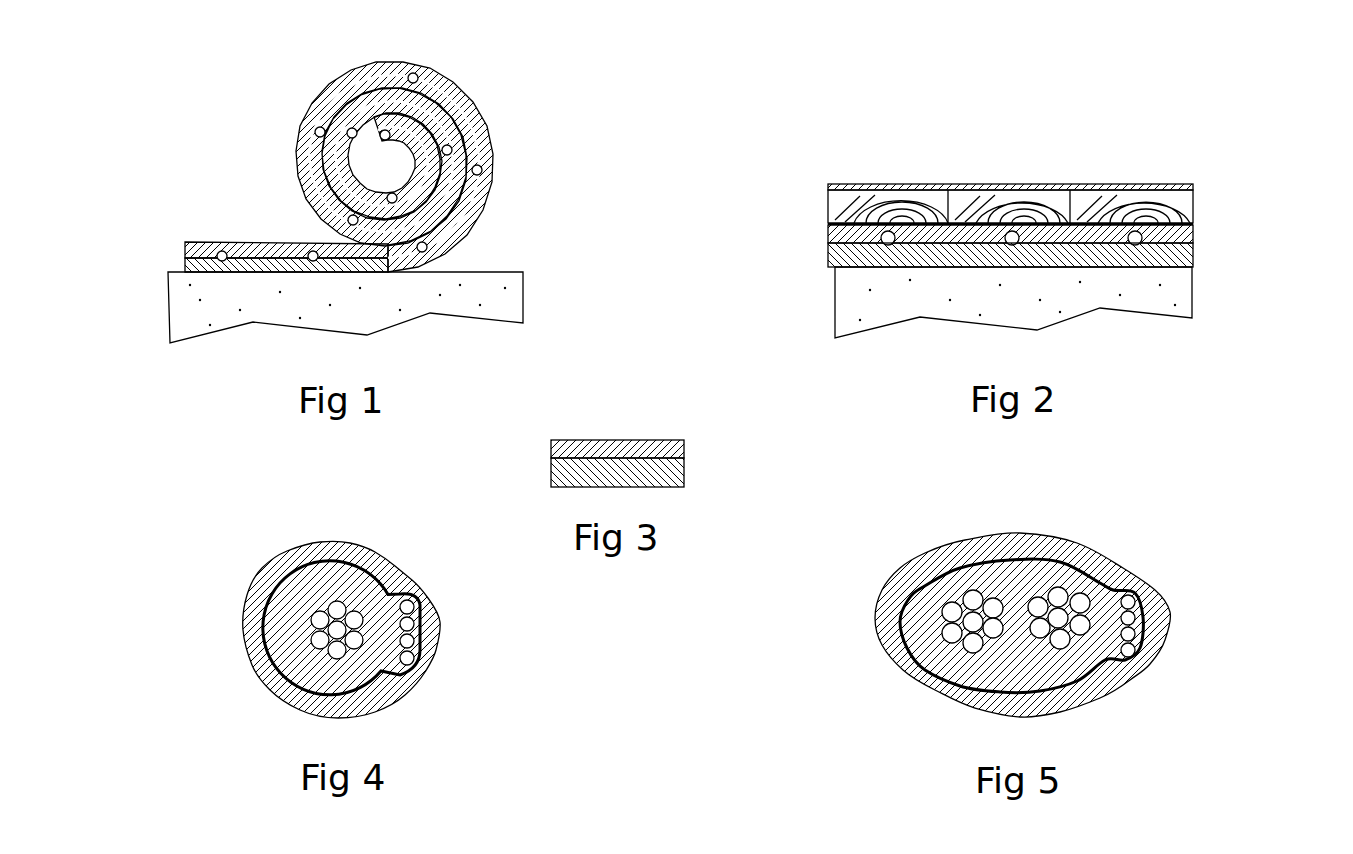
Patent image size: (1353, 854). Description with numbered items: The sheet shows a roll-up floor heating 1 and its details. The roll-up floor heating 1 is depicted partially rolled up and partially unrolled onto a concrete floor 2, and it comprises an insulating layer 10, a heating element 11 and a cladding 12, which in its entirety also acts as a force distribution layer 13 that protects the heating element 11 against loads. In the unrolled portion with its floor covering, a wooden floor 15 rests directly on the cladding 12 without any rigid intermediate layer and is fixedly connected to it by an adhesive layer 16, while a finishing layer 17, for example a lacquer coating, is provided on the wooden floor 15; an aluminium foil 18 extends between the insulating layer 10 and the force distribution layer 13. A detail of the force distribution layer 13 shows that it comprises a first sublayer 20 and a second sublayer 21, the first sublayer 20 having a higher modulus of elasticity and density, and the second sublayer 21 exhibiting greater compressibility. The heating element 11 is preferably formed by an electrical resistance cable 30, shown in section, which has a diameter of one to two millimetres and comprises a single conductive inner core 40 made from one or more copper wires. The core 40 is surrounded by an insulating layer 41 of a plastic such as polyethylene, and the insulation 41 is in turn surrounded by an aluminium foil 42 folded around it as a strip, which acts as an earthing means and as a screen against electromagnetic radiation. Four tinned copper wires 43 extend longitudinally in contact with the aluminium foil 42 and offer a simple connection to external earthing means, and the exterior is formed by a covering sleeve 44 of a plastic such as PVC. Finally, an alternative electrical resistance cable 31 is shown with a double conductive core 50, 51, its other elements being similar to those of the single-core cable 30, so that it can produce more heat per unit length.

In FIG. 1, the roll-up floor heating 1 is at (258, 82).
In FIG. 1, the concrete floor 2 is at (152, 294).
In FIG. 2, the concrete floor 2 is at (1210, 298).
In FIG. 1, the insulating layer 10 is at (168, 270).
In FIG. 2, the insulating layer 10 is at (1207, 258).
In FIG. 1, the heating element 11 is at (315, 132).
In FIG. 2, the heating element 11 is at (1135, 231).
In FIG. 4, the heating element 11 is at (325, 604).
In FIG. 1, the cladding 12 is at (244, 216).
In FIG. 1, the force distribution layer 13 is at (172, 252).
In FIG. 2, the force distribution layer 13 is at (1207, 241).
In FIG. 3, the force distribution layer 13 is at (632, 454).
In FIG. 2, the wooden floor 15 is at (1063, 175).
In FIG. 2, the adhesive layer 16 is at (1207, 227).
In FIG. 2, the finishing layer 17 is at (1157, 181).
In FIG. 2, the aluminium foil 18 is at (1011, 190).
In FIG. 3, the first sublayer 20 is at (540, 453).
In FIG. 3, the second sublayer 21 is at (540, 477).
In FIG. 4, the electrical resistance cable 30 is at (325, 604).
In FIG. 5, the alternative electrical resistance cable 31 is at (1063, 610).
In FIG. 4, the conductive inner core 40 is at (327, 592).
In FIG. 4, the insulating layer 41 is at (358, 570).
In FIG. 5, the insulating layer 41 is at (1110, 588).
In FIG. 4, the aluminium foil 42 is at (388, 600).
In FIG. 5, the aluminium foil 42 is at (1103, 667).
In FIG. 4, the tinned copper wires 43 is at (400, 695).
In FIG. 5, the tinned copper wires 43 is at (1130, 685).
In FIG. 4, the covering sleeve 44 is at (462, 619).
In FIG. 5, the covering sleeve 44 is at (1190, 613).
In FIG. 5, the first conductive core 50 is at (962, 592).
In FIG. 5, the second conductive core 51 is at (1081, 586).